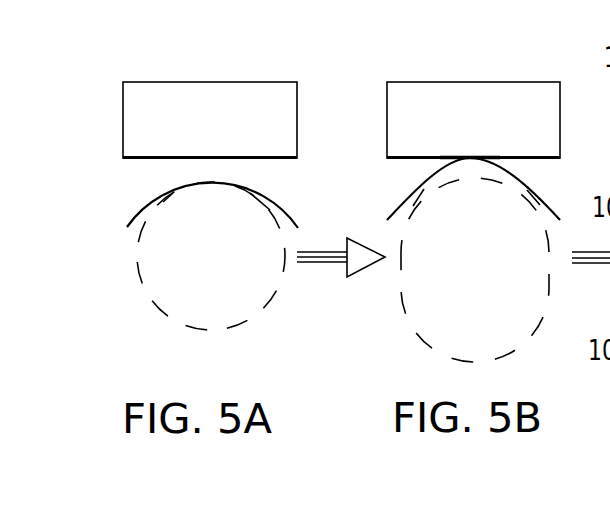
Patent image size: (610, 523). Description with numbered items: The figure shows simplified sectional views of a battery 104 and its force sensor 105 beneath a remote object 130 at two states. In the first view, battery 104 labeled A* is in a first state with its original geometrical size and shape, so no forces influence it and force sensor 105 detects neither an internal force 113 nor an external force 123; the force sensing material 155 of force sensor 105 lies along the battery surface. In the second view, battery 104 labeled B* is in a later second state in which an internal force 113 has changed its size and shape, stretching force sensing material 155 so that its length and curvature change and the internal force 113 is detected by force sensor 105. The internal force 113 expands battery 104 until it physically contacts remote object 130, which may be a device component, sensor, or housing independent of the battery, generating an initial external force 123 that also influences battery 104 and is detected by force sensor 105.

In FIG. 5A, the remote object 130 is at (123, 108).
In FIG. 5B, the remote object 130 is at (387, 102).
In FIG. 5A, the battery 104 is at (190, 327).
In FIG. 5B, the battery 104 is at (412, 316).
In FIG. 5A, the force sensor 105 is at (126, 209).
In FIG. 5B, the force sensor 105 is at (385, 206).
In FIG. 5A, the force sensing material 155 is at (285, 213).
In FIG. 5B, the force sensing material 155 is at (547, 202).
In FIG. 5B, the external force 123 is at (466, 146).
In FIG. 5B, the internal force 113 is at (470, 172).